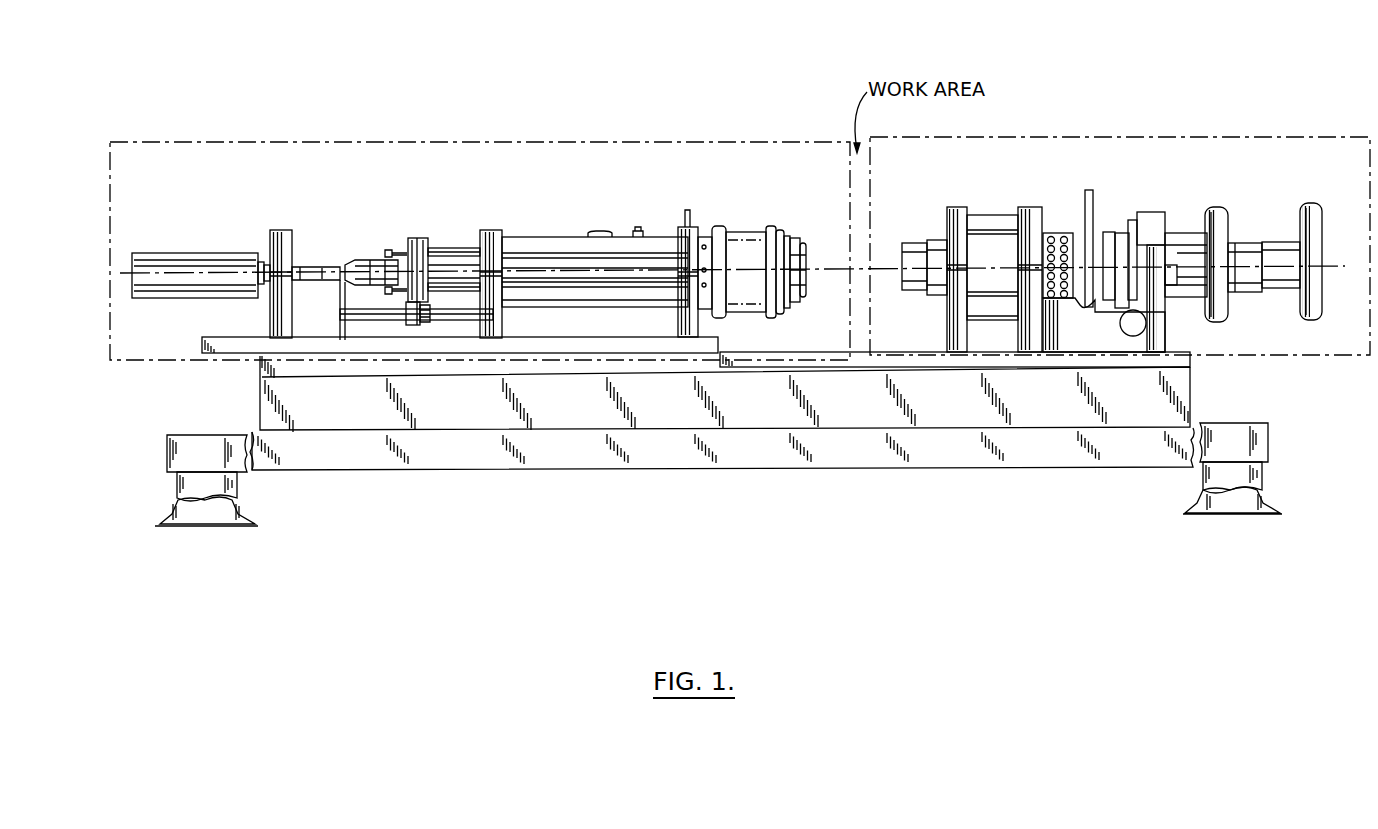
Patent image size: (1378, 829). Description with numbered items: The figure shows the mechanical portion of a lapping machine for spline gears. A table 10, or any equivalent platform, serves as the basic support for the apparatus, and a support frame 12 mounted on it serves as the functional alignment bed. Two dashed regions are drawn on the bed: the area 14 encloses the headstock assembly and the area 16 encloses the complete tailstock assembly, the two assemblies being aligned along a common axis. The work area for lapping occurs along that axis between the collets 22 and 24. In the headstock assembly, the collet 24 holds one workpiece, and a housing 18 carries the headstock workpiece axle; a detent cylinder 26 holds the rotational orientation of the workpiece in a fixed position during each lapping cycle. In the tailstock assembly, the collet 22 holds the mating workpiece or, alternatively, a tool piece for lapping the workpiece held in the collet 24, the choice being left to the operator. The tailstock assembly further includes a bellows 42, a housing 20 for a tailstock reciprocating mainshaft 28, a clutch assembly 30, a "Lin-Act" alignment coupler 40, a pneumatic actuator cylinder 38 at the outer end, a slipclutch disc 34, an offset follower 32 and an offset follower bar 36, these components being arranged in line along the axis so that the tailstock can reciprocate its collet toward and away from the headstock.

The table 10 is at (1270, 436).
The support frame 12 is at (1192, 383).
The headstock assembly 14 is at (1100, 137).
The tailstock assembly 16 is at (518, 142).
The housing 18 is at (978, 215).
The housing 20 is at (556, 237).
The collet 22 is at (800, 262).
The collet 24 is at (900, 278).
The detent cylinder 26 is at (1066, 233).
The tailstock reciprocating mainshaft 28 is at (467, 247).
The clutch assembly 30 is at (424, 238).
The offset follower 32 is at (408, 322).
The slipclutch disc 34 is at (421, 325).
The offset follower bar 36 is at (357, 318).
The pneumatic actuator cylinder 38 is at (167, 253).
The alignment coupler 40 is at (375, 257).
The bellows 42 is at (732, 226).